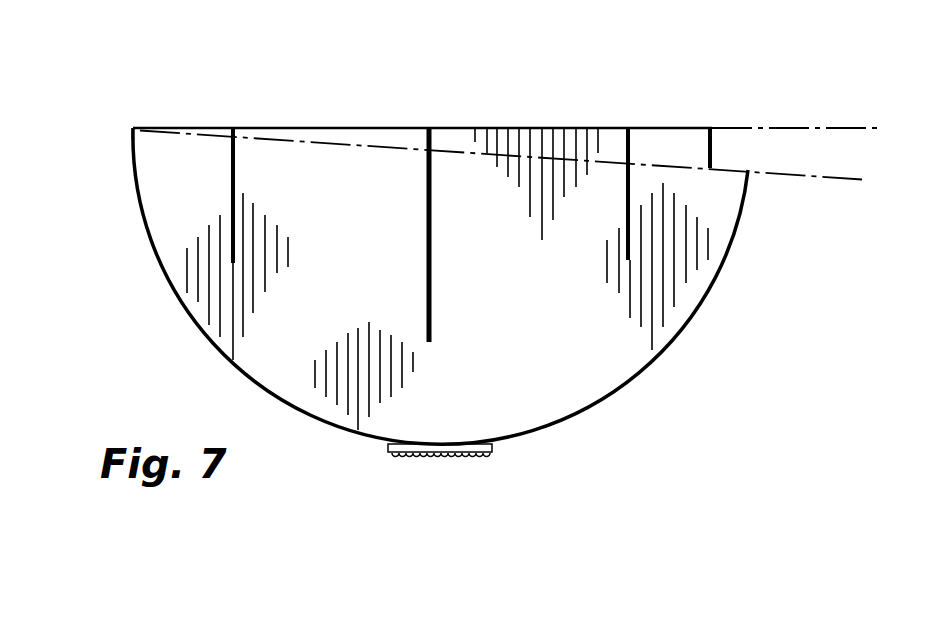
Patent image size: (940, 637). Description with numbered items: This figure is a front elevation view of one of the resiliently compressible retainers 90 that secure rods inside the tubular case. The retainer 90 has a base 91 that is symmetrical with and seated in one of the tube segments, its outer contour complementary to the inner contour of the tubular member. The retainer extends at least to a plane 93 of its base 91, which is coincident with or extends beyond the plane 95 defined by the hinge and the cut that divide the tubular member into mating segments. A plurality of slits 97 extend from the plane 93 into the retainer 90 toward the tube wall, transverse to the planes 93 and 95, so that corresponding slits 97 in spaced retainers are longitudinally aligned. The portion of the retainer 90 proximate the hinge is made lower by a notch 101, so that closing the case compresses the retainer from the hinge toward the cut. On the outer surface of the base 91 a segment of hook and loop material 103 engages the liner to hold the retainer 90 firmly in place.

The retainer 90 is at (726, 101).
The base 91 is at (225, 357).
The plane 93 is at (825, 128).
The plane 95 is at (835, 176).
The slits 97 is at (235, 163).
The notch 101 is at (714, 147).
The hook and loop material 103 is at (488, 447).